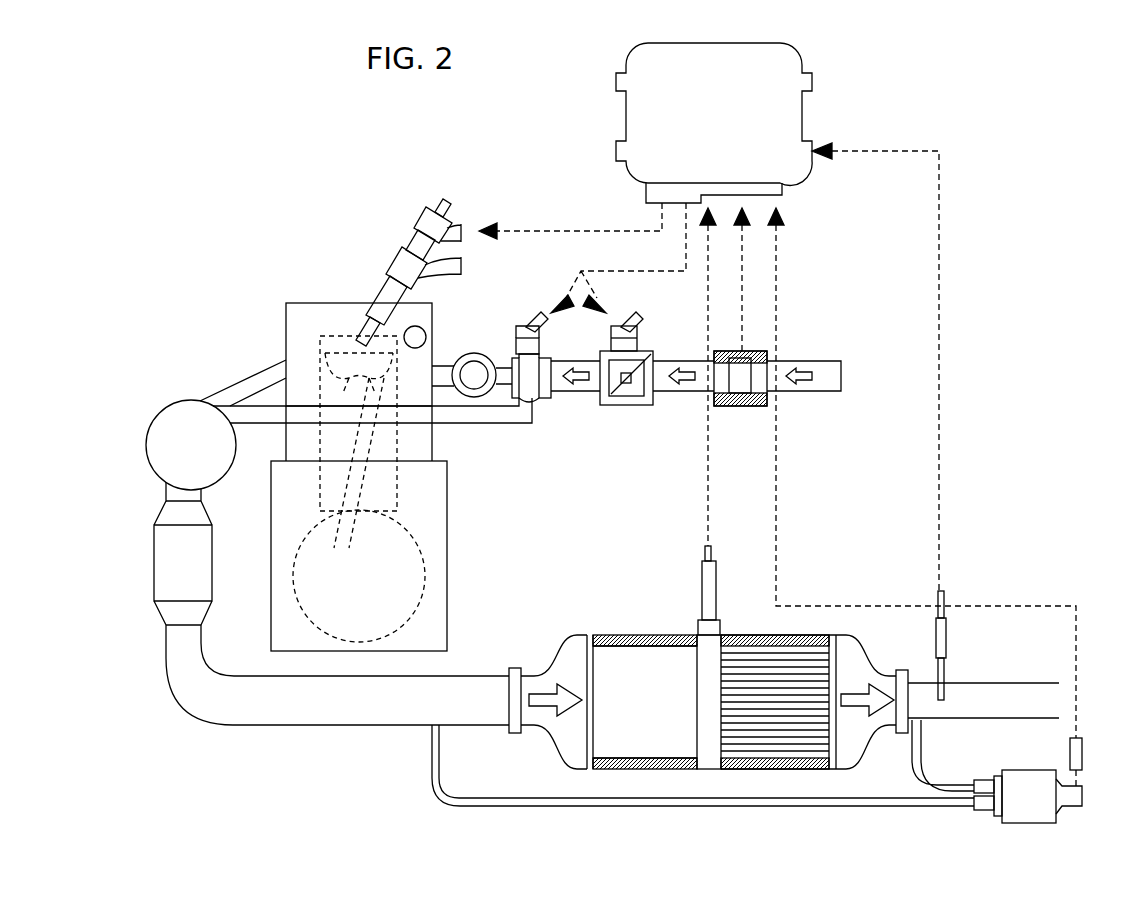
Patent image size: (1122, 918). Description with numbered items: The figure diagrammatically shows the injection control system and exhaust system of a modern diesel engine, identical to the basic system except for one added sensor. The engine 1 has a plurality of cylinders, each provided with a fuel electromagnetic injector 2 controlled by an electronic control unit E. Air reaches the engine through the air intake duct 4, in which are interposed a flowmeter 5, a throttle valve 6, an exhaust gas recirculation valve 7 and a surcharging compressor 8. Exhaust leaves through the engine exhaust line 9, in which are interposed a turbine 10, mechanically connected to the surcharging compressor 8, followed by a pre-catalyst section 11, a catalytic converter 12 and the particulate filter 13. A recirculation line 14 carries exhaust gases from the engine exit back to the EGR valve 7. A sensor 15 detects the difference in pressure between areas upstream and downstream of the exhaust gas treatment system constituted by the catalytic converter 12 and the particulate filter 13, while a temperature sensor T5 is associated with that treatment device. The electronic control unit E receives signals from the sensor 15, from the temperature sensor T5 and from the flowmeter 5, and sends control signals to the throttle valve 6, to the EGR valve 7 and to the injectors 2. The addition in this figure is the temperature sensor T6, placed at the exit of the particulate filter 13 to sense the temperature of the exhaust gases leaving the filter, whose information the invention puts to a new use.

The engine 1 is at (332, 268).
The fuel electromagnetic injector 2 is at (404, 251).
The air intake duct 4 is at (822, 358).
The flowmeter 5 is at (760, 398).
The throttle valve 6 is at (631, 393).
The exhaust gas recirculation valve 7 is at (532, 378).
The surcharging compressor 8 is at (469, 358).
The engine exhaust line 9 is at (254, 378).
The turbine 10 is at (150, 418).
The pre-catalyst section 11 is at (150, 556).
The catalytic converter 12 is at (633, 772).
The particulate filter 13 is at (778, 777).
The recirculation line 14 is at (472, 432).
The sensor 15 is at (1042, 817).
The electronic control unit E is at (810, 113).
The temperature sensor T5 is at (700, 602).
The temperature sensor T6 is at (950, 656).